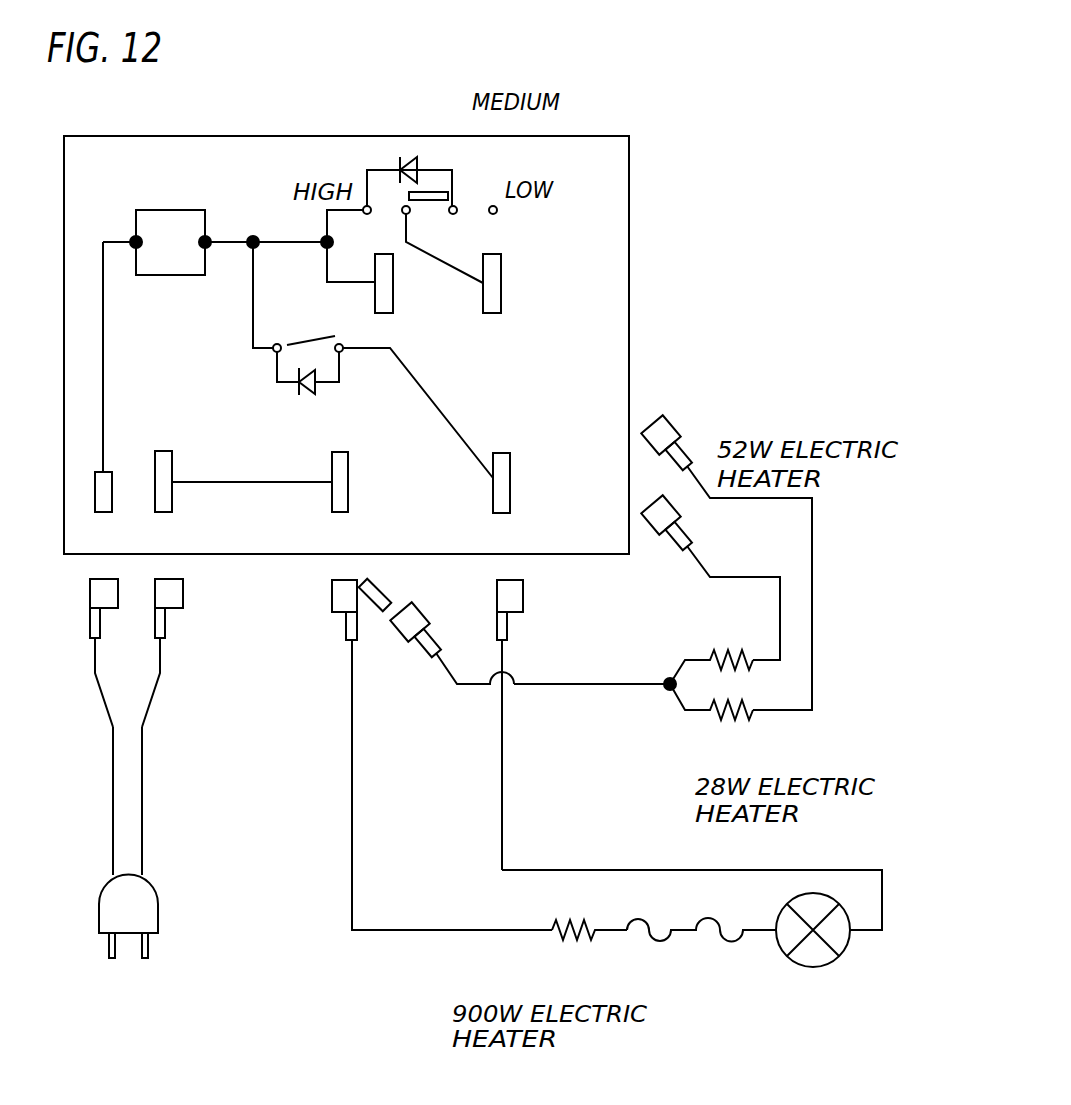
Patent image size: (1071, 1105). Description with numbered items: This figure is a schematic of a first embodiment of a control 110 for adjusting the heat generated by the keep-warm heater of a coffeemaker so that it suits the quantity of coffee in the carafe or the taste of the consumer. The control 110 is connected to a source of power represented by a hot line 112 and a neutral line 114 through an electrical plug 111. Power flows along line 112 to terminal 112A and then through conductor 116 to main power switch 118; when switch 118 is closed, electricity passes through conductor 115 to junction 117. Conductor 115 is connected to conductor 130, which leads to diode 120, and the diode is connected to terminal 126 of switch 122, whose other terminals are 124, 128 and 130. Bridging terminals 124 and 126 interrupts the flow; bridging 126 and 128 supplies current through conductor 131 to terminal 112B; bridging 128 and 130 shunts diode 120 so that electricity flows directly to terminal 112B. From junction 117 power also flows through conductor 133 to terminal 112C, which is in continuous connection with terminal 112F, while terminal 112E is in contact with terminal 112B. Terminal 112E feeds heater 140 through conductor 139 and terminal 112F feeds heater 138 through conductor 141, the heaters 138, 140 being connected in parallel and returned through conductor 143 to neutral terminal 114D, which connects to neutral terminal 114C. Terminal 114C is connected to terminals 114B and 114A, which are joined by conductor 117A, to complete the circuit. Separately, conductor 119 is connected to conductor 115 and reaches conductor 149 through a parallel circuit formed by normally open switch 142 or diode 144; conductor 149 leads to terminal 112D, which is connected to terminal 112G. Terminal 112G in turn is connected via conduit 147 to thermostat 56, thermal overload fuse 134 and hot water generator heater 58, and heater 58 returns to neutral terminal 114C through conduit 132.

The main power switch 118 is at (165, 230).
The conductor 115 is at (282, 237).
The conductor 116 is at (103, 342).
The conductor 119 is at (252, 287).
The junction 117 is at (323, 248).
The conductor 133 is at (347, 280).
The conductor / terminal 130 is at (362, 190).
The terminal 128 is at (403, 203).
The diode 120 is at (404, 160).
The switch 122 is at (430, 196).
The terminal 126 is at (455, 205).
The terminal 124 is at (495, 205).
The conductor 131 is at (452, 262).
The terminal 112B is at (502, 302).
The terminal 112C is at (393, 302).
The normally open switch 142 is at (300, 343).
The diode 144 is at (310, 395).
The conductor 149 is at (437, 403).
The terminal 112A is at (107, 490).
The terminal 114A is at (168, 463).
The conductor 117A is at (215, 483).
The terminal 114B is at (348, 460).
The terminal 112D is at (505, 477).
The terminal 112E is at (667, 437).
The conductor 139 is at (793, 712).
The terminal 112F is at (667, 520).
The conductor 141 is at (710, 580).
The heater 138 is at (738, 650).
The electrical heater 140 is at (730, 718).
The neutral terminal 114C is at (335, 593).
The conduit 132 is at (418, 932).
The neutral terminal 114D is at (401, 627).
The terminal 112G is at (510, 600).
The conductor 143 is at (548, 685).
The conduit 147 is at (553, 870).
The hot water generator heater 58 is at (583, 943).
The thermal overload fuse 134 is at (695, 932).
The thermostat 56 is at (822, 968).
The control 110 is at (87, 682).
The line 112 is at (103, 700).
The line 114 is at (145, 813).
The electrical plug 111 is at (137, 913).